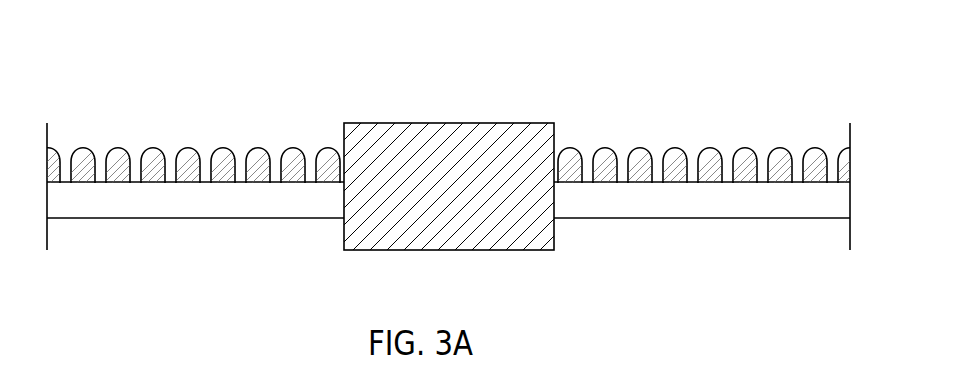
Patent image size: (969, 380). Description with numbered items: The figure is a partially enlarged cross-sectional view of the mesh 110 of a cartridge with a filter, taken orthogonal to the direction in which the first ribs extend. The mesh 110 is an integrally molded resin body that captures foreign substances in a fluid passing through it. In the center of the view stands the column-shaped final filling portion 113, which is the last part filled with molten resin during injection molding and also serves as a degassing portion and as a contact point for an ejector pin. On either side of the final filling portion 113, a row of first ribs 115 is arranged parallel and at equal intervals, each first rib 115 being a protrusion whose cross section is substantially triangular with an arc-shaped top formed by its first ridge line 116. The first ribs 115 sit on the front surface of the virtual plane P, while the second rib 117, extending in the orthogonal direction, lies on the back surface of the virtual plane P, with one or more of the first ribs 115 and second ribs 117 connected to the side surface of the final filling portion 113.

The mesh 110 is at (789, 88).
The final filling portion 113 is at (537, 140).
The first rib 115 is at (327, 152).
The first ridge line 116 is at (220, 152).
The second rib 117 is at (123, 207).
The virtual plane P is at (277, 184).